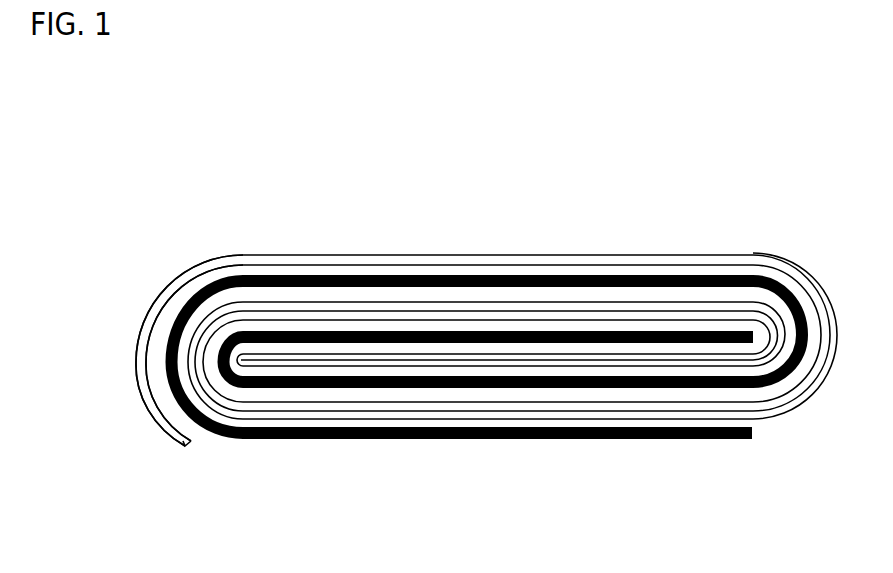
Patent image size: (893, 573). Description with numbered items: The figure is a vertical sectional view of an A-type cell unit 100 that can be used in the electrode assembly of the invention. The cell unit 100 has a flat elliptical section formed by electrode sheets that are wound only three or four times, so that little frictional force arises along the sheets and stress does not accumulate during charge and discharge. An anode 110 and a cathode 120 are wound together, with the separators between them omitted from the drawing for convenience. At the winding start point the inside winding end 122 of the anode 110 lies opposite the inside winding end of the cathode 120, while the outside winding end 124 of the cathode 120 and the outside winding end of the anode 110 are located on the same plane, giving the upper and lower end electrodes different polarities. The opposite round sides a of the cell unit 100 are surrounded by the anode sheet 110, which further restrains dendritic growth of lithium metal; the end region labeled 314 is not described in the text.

The A-type cell unit 100 is at (213, 209).
The anode 110 is at (384, 254).
The cathode 120 is at (403, 441).
The inside winding end of anode 122 is at (752, 330).
The outside winding end of cathode 124 is at (752, 436).
The finishing tape end 314 is at (190, 446).
The round sides a is at (135, 336).